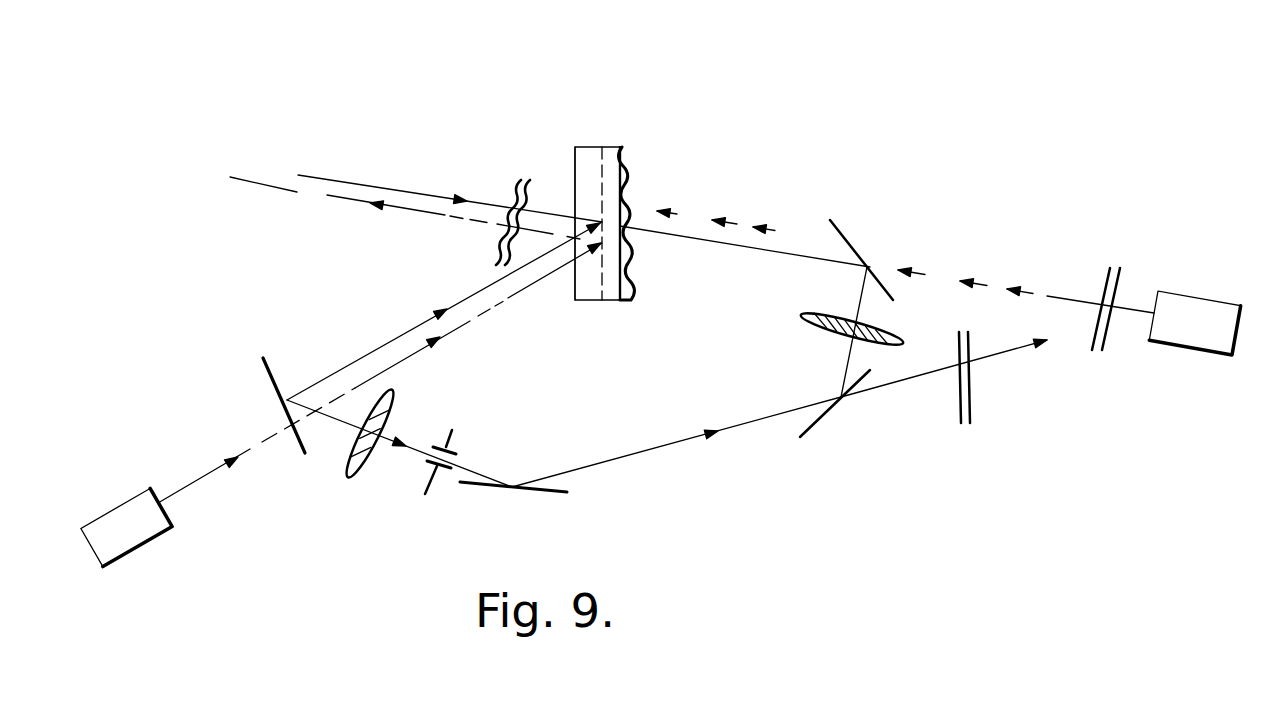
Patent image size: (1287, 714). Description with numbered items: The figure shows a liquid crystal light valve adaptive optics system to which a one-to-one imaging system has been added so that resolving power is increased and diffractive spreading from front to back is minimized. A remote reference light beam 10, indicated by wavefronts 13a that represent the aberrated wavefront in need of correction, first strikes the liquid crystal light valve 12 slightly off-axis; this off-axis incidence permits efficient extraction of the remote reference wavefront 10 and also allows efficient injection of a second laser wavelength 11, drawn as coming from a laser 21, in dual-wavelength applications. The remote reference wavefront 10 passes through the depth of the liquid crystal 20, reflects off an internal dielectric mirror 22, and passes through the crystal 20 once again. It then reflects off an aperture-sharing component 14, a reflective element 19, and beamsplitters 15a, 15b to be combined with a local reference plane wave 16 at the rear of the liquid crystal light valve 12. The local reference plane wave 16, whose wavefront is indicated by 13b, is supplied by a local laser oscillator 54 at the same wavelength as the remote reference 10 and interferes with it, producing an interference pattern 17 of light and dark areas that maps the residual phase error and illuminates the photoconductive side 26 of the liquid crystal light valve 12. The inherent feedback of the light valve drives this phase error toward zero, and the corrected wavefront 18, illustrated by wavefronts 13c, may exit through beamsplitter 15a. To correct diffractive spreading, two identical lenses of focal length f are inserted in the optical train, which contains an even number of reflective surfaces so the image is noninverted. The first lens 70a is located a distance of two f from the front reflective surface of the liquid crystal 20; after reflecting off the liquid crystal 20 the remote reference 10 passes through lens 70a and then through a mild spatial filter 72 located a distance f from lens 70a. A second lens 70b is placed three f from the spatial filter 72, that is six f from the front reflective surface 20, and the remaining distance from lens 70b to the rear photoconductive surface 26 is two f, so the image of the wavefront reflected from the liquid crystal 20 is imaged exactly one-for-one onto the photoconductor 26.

The remote reference light beam 10 is at (373, 187).
The second laser wavelength 11 is at (247, 183).
The liquid crystal light valve 12 is at (597, 100).
The wavefronts of the remote reference 13a is at (527, 165).
The wavefront of the local reference plane wave 13b is at (1116, 252).
The wavefronts of the corrected wavefront 13c is at (986, 345).
The aperture-sharing component 14 is at (270, 383).
The beamsplitter 15a is at (813, 423).
The beamsplitter 15b is at (853, 243).
The local reference plane wave 16 is at (786, 230).
The interference pattern 17 is at (622, 148).
The corrected wavefront 18 is at (1015, 355).
The reflective element 19 is at (540, 493).
The liquid crystal 20 is at (584, 275).
The laser 21 is at (150, 487).
The internal dielectric mirror 22 is at (603, 322).
The photoconductive side 26 is at (614, 290).
The local laser oscillator 54 is at (1148, 347).
The first lens 70a is at (392, 397).
The second lens 70b is at (800, 317).
The spatial filter 72 is at (453, 432).